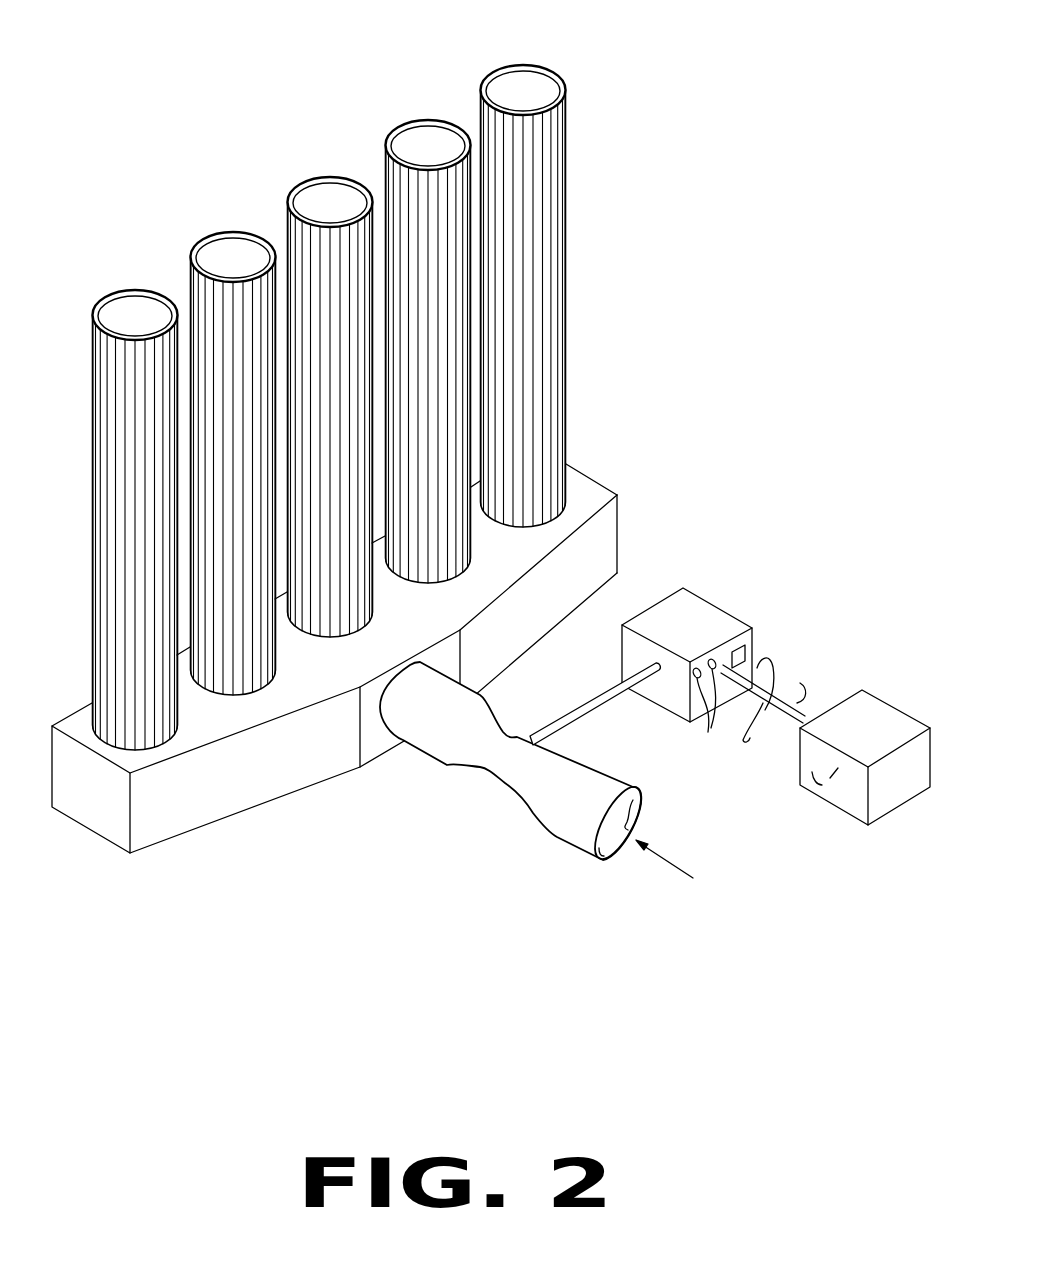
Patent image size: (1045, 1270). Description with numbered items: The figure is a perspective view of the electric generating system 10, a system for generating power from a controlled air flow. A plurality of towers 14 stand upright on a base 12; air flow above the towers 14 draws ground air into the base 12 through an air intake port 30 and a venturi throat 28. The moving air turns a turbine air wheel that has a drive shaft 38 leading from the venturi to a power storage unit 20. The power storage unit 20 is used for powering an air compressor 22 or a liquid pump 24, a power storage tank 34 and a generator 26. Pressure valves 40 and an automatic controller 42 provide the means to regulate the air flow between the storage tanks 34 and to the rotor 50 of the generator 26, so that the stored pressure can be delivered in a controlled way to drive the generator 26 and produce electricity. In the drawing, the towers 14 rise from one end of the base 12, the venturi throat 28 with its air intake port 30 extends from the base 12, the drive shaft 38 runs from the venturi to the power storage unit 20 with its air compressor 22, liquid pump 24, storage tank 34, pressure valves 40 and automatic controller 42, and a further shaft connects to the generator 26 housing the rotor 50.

The electric generating system 10 is at (744, 137).
The base 12 is at (273, 797).
The tower 14 is at (135, 308).
The power storage unit 20 is at (666, 639).
The air compressor 22 is at (647, 622).
The liquid pump 24 is at (685, 607).
The generator 26 is at (833, 789).
The venturi throat 28 is at (554, 775).
The air intake port 30 is at (650, 820).
The power storage tank 34 is at (712, 635).
The drive shaft from venturi 38 is at (610, 707).
The pressure valve 40 is at (740, 715).
The automatic controller 42 is at (752, 645).
The rotor of generator 50 is at (803, 762).